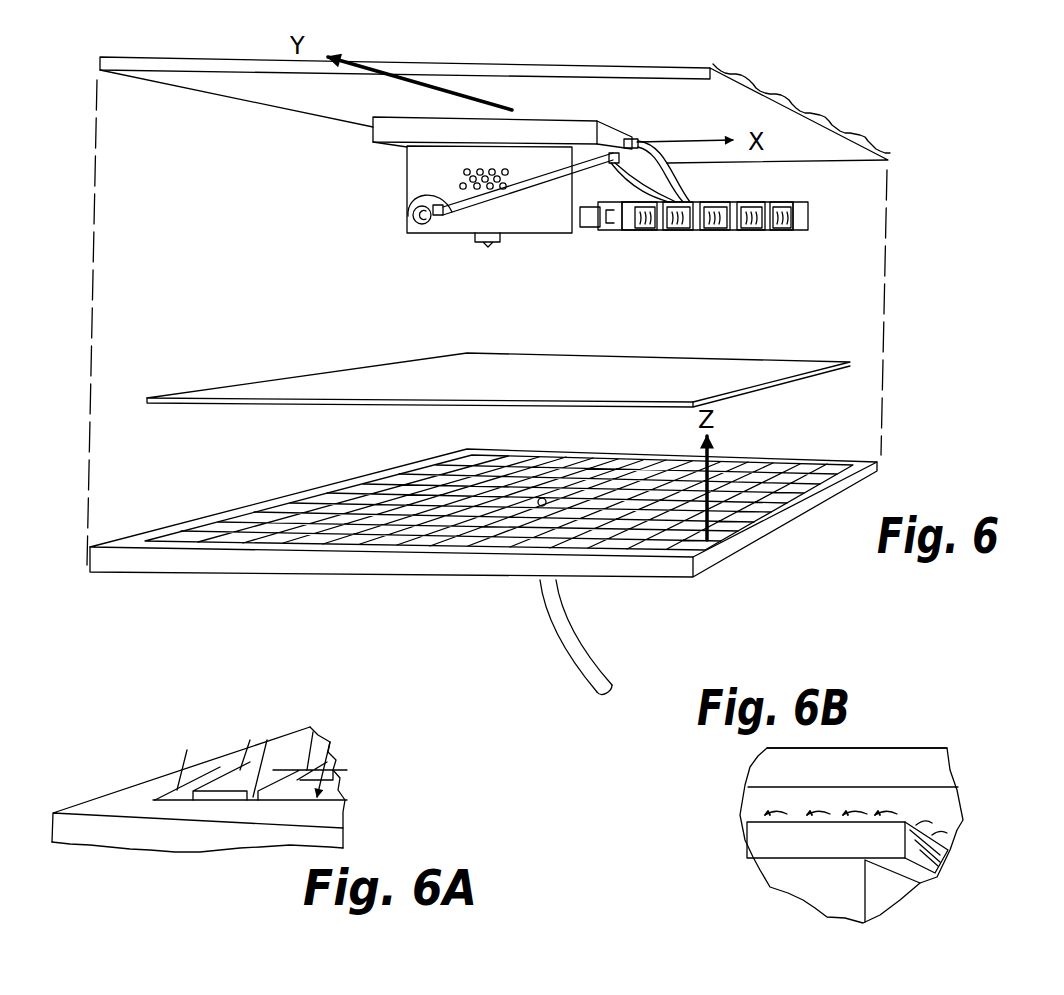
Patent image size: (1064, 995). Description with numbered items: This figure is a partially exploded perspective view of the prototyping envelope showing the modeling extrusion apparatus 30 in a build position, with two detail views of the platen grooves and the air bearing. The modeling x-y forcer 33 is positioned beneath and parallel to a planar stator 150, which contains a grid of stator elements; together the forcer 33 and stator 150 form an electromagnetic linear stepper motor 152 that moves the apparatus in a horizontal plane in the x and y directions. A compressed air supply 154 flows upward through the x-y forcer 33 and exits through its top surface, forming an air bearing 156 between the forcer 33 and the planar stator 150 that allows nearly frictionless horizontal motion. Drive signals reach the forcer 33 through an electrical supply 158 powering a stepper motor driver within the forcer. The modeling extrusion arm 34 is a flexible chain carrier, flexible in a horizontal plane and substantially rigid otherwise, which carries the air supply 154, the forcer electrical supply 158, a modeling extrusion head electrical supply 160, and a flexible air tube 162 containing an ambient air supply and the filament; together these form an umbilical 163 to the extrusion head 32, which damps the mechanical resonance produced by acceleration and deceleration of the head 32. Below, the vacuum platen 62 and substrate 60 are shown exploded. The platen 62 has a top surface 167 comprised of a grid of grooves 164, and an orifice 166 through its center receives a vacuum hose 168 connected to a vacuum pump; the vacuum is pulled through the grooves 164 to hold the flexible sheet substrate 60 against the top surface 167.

In FIG. 6, the modeling extrusion apparatus 30 is at (612, 118).
In FIG. 6, the extrusion head 32 is at (418, 160).
In FIG. 6, the x-y forcer 33 is at (397, 127).
In FIG. 6B, the x-y forcer 33 is at (948, 852).
In FIG. 6, the modeling extrusion arm 34 is at (742, 226).
In FIG. 6, the substrate 60 is at (352, 378).
In FIG. 6, the vacuum platen 62 is at (300, 560).
In FIG. 6A, the vacuum platen 62 is at (88, 825).
In FIG. 6, the planar stator 150 is at (460, 67).
In FIG. 6B, the planar stator 150 is at (887, 758).
In FIG. 6, the electromagnetic linear stepper motor 152 is at (340, 128).
In FIG. 6, the compressed air supply 154 is at (643, 176).
In FIG. 6B, the air bearing 156 is at (923, 798).
In FIG. 6, the electrical supply 158 is at (645, 143).
In FIG. 6, the modeling extrusion head electrical supply 160 is at (407, 197).
In FIG. 6, the flexible air tube 162 is at (757, 229).
In FIG. 6, the umbilical 163 is at (727, 236).
In FIG. 6A, the grooves 164 is at (270, 770).
In FIG. 6, the orifice 166 is at (538, 506).
In FIG. 6, the top surface 167 is at (223, 527).
In FIG. 6, the vacuum hose 168 is at (580, 633).